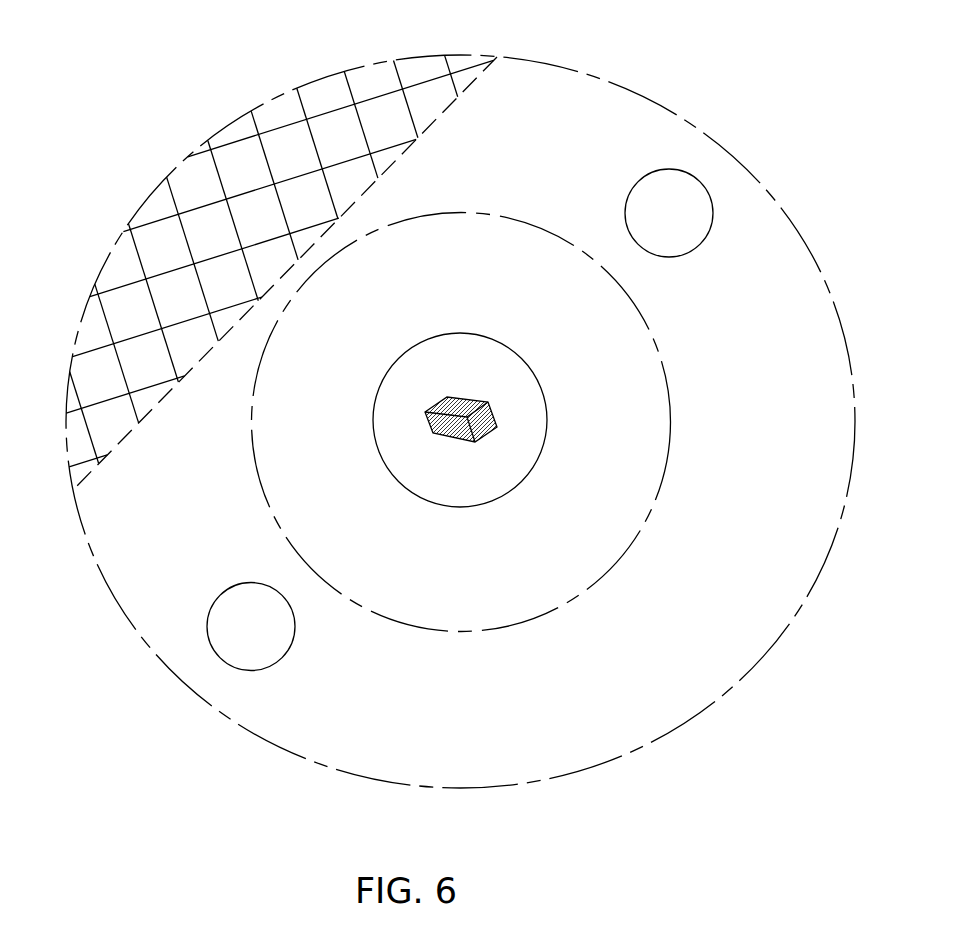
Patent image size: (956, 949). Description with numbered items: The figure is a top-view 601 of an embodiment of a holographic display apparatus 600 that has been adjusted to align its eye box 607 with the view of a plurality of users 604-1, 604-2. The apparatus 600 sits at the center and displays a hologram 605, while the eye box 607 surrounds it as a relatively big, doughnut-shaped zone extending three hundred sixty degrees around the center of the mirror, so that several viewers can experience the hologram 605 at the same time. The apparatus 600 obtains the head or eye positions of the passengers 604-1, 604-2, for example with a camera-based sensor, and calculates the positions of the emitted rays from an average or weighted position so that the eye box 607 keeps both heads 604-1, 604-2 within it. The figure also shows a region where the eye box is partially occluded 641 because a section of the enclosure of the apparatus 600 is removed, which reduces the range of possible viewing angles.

The top-view 601 is at (97, 110).
The partially occluded eye box region 641 is at (132, 272).
The eye box 607 is at (640, 647).
The holographic display apparatus 600 is at (453, 478).
The hologram 605 is at (505, 392).
The user 604-1 is at (700, 226).
The user 604-2 is at (282, 639).